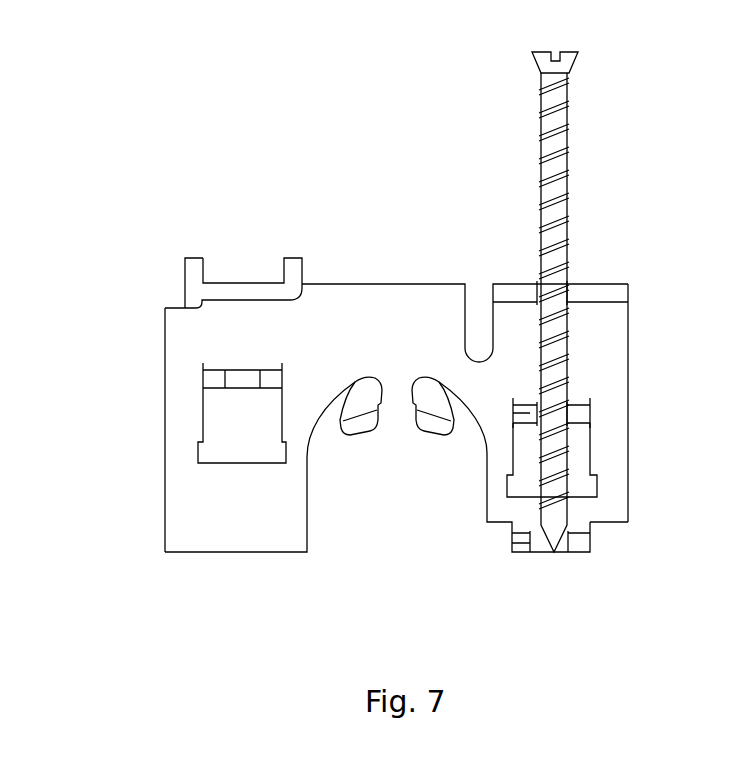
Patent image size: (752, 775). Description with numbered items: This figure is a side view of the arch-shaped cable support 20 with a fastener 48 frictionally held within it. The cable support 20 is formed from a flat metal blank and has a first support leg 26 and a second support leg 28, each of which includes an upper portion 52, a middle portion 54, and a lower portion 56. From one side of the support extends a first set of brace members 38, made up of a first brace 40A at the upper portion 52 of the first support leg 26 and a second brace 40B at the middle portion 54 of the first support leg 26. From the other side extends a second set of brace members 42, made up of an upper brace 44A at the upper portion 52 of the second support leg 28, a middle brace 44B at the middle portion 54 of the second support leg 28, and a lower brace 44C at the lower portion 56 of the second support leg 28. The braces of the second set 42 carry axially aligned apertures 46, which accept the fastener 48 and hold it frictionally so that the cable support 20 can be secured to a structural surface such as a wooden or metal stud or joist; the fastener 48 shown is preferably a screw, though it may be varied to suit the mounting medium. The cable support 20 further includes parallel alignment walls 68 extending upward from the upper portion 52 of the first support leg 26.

The arch-shaped cable support 20 is at (176, 221).
The first support leg 26 is at (243, 531).
The second support leg 28 is at (626, 516).
The first set of brace members 38 is at (280, 377).
The first brace 40A is at (159, 308).
The second brace 40B is at (208, 381).
The second set of brace members 42 is at (505, 288).
The upper brace 44A is at (622, 295).
The middle brace 44B is at (590, 413).
The lower brace 44C is at (568, 543).
The axially aligned apertures 46 is at (537, 292).
The fastener 48 is at (572, 87).
The upper portion 52 is at (243, 303).
The middle portion 54 is at (182, 367).
The lower portion 56 is at (630, 520).
The parallel alignment walls 68 is at (185, 273).